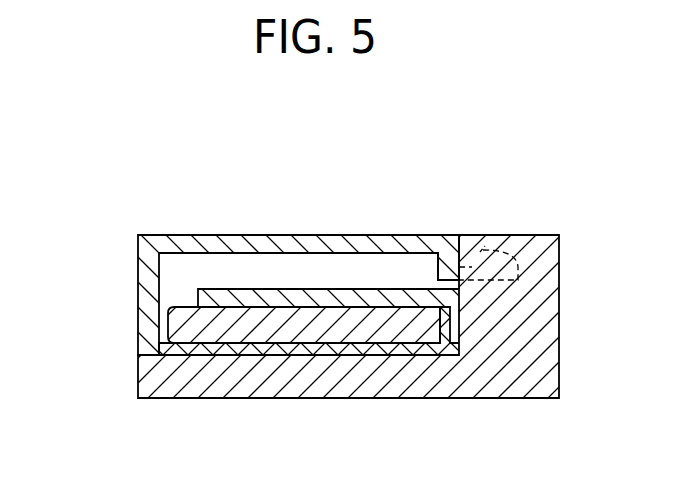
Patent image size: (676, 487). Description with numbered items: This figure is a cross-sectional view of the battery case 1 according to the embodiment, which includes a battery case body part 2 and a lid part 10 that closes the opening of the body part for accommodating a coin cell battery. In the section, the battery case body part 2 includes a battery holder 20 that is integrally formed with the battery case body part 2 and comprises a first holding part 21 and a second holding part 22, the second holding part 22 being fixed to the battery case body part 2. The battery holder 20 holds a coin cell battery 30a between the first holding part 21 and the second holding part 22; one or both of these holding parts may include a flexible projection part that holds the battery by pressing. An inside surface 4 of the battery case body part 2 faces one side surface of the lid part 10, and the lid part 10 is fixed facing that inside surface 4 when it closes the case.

The battery case 1 is at (122, 213).
The battery case body part 2 is at (545, 285).
The inside surface 4 is at (448, 240).
The lid part 10 is at (268, 242).
The battery holder 20 is at (72, 255).
The first holding part 21 is at (203, 297).
The second holding part 22 is at (170, 350).
The coin cell battery 30a is at (303, 344).